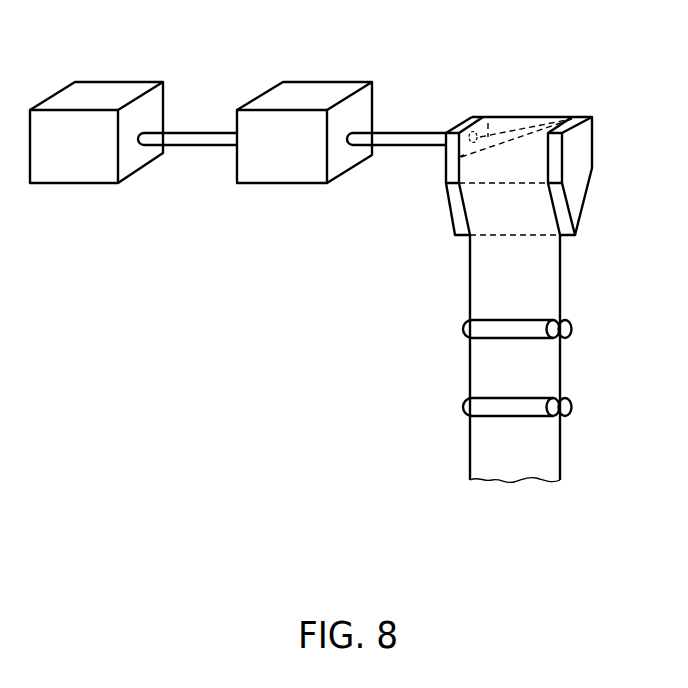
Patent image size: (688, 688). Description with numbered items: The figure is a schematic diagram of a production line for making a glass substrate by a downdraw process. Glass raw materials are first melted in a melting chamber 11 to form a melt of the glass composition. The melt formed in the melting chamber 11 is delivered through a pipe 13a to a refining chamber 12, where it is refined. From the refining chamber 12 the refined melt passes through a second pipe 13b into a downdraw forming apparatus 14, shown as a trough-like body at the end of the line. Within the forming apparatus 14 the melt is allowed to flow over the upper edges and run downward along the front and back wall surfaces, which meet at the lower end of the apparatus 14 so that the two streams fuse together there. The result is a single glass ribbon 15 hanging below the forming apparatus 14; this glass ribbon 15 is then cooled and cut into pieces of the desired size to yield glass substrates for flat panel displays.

The melting chamber 11 is at (103, 93).
The refining chamber 12 is at (312, 92).
The pipe 13a is at (192, 138).
The pipe 13b is at (400, 140).
The downdraw forming apparatus 14 is at (578, 108).
The glass ribbon 15 is at (542, 287).